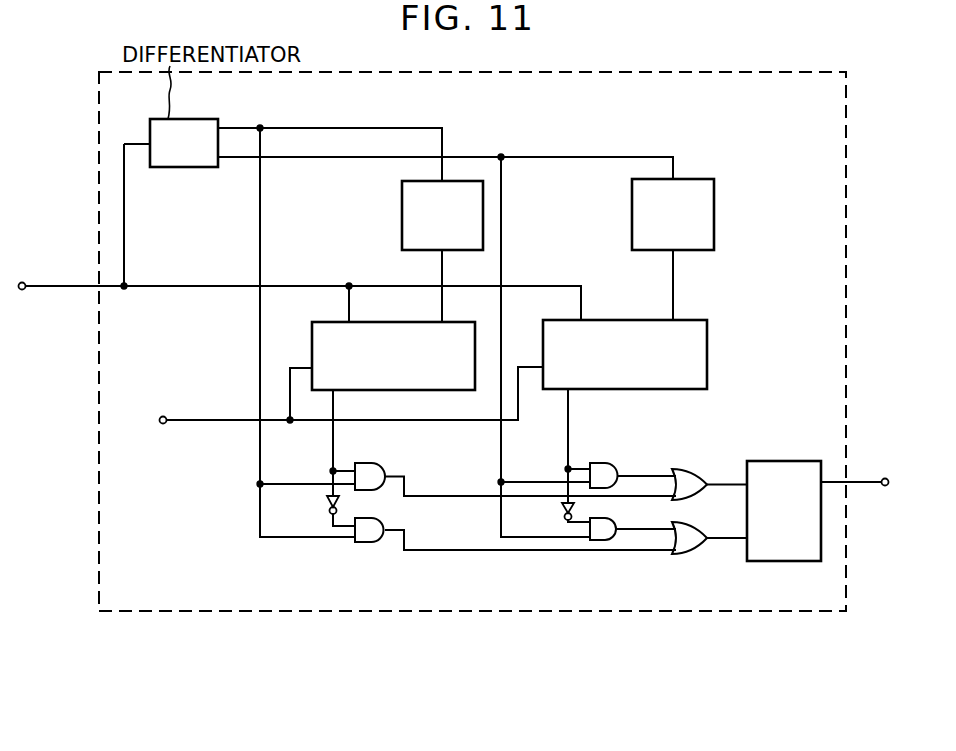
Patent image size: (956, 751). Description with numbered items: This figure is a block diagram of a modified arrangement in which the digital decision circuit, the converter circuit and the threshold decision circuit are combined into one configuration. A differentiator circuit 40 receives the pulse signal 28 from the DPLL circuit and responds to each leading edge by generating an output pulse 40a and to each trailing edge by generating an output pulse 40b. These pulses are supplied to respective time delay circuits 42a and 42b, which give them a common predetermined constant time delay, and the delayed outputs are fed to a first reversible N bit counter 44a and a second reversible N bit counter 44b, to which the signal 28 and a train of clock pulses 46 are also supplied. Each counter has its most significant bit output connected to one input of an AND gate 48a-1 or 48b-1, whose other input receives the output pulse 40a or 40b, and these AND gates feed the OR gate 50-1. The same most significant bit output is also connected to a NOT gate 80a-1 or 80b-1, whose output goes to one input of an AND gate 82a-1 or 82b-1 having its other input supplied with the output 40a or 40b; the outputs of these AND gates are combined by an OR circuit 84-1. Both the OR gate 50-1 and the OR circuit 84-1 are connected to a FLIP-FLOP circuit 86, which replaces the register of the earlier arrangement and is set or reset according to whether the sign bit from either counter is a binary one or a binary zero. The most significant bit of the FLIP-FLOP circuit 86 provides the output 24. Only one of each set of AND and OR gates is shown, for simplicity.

The output 24 is at (883, 479).
The signal 28 is at (23, 284).
The differentiator circuit 40 is at (188, 119).
The output pulse 40a is at (297, 128).
The output pulse 40b is at (337, 159).
The time delay circuit 42a is at (402, 210).
The time delay circuit 42b is at (632, 208).
The first reversible N bit counter 44a is at (328, 320).
The second reversible N bit counter 44b is at (707, 367).
The clock pulses 46 is at (162, 417).
The AND gate 48a-1 is at (379, 470).
The AND gate 48b-1 is at (605, 462).
The OR gate 50-1 is at (693, 470).
The NOT gate 80a-1 is at (329, 500).
The NOT gate 80b-1 is at (562, 509).
The AND gate 82a-1 is at (365, 542).
The AND gate 82b-1 is at (604, 540).
The OR circuit 84-1 is at (693, 554).
The FLIP-FLOP circuit 86 is at (800, 461).